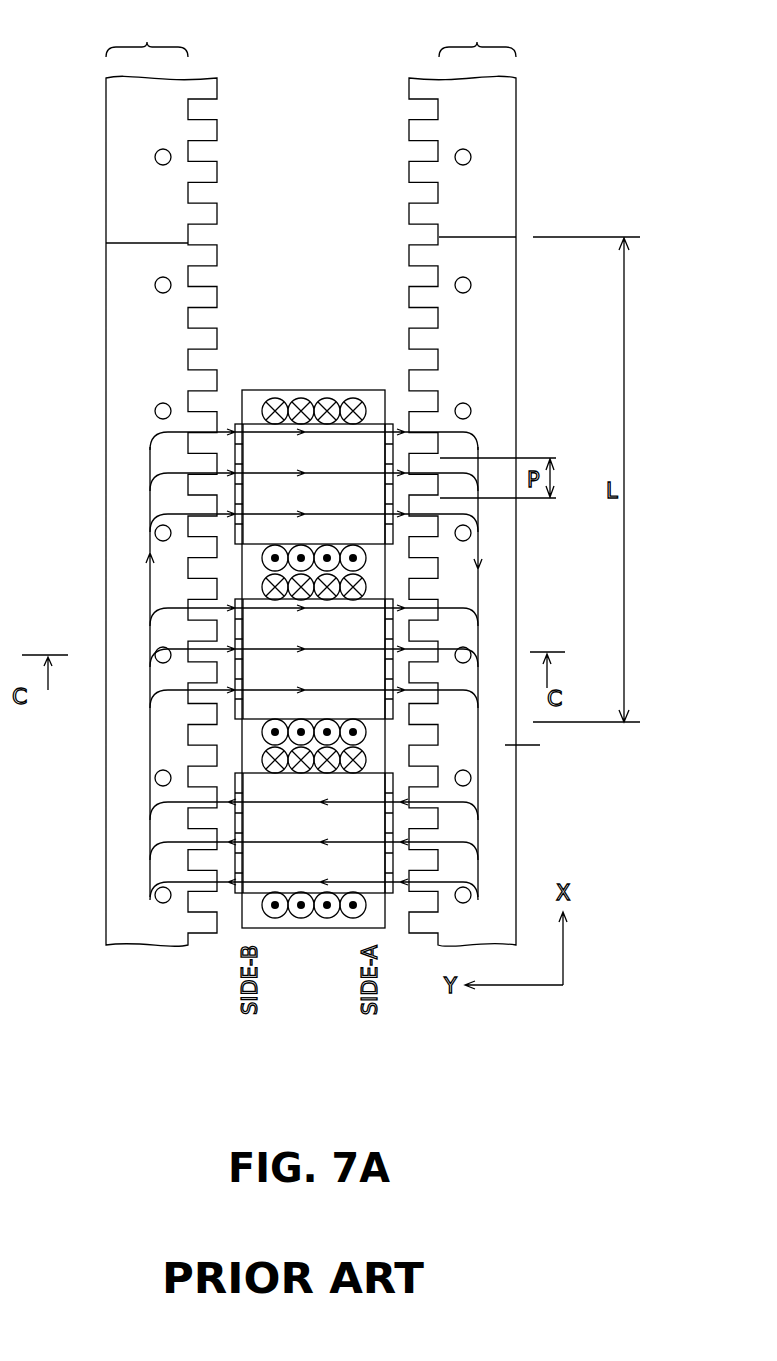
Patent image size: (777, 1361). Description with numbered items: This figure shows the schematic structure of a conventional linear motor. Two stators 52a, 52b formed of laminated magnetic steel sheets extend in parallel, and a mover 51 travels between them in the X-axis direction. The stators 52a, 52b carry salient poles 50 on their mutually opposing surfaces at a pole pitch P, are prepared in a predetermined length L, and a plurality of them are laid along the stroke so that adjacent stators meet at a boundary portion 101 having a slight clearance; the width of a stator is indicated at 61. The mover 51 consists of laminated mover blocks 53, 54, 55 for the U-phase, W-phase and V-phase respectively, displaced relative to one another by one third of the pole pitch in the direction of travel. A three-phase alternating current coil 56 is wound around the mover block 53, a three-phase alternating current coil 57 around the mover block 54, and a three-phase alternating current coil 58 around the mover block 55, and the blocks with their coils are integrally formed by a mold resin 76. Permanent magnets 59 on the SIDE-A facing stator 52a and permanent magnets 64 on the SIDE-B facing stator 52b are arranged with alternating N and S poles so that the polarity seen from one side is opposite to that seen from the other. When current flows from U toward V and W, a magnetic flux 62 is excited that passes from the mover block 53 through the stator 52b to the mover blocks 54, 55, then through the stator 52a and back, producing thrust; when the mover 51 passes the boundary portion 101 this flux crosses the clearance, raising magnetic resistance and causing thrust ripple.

The salient poles 50 is at (396, 420).
The mover 51 is at (317, 381).
The stator 52a is at (500, 398).
The stator 52b is at (134, 527).
The mover block 53 is at (282, 862).
The mover block 54 is at (272, 703).
The mover block 55 is at (272, 450).
The three-phase alternating current coil 56 is at (332, 917).
The three-phase alternating current coil 57 is at (368, 742).
The three-phase alternating current coil 58 is at (368, 566).
The permanent magnets 59 is at (398, 450).
The yoke width 61 is at (311, 34).
The magnetic flux 62 is at (150, 797).
The permanent magnets 64 is at (235, 632).
The mold resin 76 is at (252, 393).
The boundary portion 101 is at (492, 237).